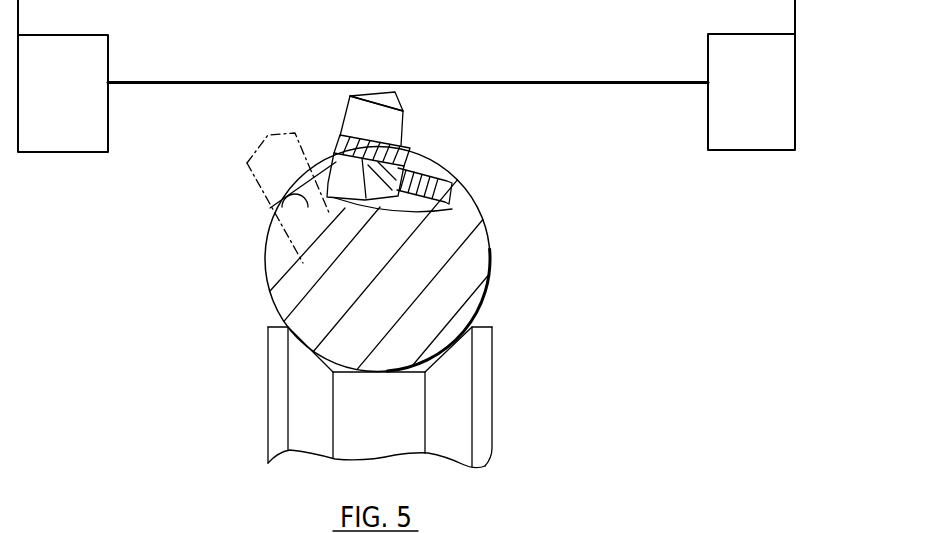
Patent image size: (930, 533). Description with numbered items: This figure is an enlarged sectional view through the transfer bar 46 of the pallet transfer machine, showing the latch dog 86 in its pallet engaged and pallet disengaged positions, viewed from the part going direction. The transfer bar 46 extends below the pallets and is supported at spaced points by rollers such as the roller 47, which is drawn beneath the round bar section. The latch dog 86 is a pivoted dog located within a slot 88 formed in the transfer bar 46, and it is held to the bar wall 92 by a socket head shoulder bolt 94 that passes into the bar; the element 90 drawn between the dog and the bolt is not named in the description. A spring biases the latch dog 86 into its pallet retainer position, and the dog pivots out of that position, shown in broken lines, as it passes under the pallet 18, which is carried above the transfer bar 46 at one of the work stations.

The pallet 18 is at (655, 70).
The transfer bar 46 is at (473, 245).
The roller 47 is at (482, 405).
The latch dog 86 is at (390, 121).
The slot 88 is at (284, 196).
The flange 90 is at (415, 150).
The bar wall 92 is at (452, 208).
The socket head shoulder bolt 94 is at (338, 155).